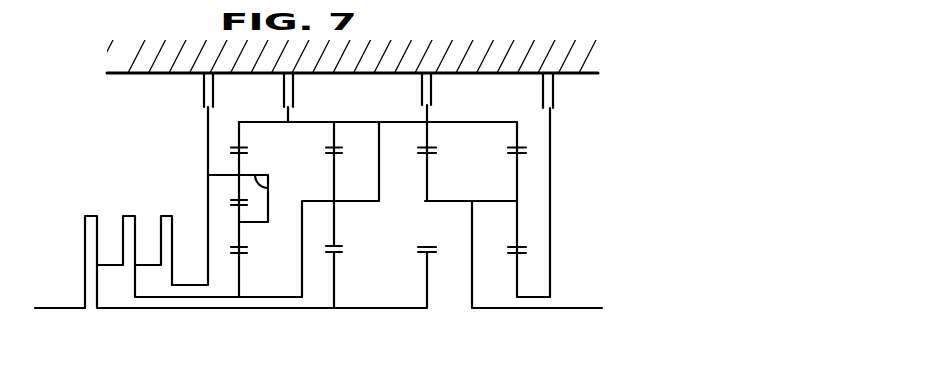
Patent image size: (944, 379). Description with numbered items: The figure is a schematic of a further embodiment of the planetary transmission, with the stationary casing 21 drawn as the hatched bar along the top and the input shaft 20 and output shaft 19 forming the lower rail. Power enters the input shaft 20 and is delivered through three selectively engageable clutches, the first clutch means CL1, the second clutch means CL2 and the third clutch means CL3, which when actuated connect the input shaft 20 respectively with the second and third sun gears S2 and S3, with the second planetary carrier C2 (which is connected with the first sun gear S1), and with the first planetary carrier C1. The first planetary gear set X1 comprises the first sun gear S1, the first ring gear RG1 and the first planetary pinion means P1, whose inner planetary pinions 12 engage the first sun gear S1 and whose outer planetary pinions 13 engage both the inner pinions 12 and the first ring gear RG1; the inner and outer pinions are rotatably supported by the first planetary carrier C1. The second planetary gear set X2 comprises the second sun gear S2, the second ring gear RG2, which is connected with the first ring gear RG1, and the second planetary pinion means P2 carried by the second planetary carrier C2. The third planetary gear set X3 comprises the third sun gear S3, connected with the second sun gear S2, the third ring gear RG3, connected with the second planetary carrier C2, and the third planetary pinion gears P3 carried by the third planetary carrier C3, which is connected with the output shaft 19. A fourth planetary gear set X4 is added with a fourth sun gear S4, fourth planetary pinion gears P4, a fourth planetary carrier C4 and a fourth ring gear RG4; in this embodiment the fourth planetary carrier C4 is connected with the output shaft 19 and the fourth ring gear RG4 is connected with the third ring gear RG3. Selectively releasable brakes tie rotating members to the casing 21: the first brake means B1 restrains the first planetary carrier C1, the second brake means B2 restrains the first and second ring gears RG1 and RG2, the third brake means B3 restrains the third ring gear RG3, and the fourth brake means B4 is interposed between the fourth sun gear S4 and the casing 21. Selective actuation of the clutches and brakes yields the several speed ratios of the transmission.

The casing 21 is at (125, 74).
The first brake means B1 is at (202, 97).
The second brake means B2 is at (285, 97).
The third brake means B3 is at (423, 98).
The fourth brake means B4 is at (557, 98).
The first ring gear RG1 is at (242, 136).
The second ring gear RG2 is at (335, 134).
The third ring gear RG3 is at (428, 136).
The fourth ring gear RG4 is at (518, 133).
The first clutch means CL1 is at (91, 216).
The second clutch means CL2 is at (129, 216).
The third clutch means CL3 is at (167, 216).
The outer planetary pinions 13 is at (239, 167).
The inner planetary pinions 12 is at (239, 208).
The first planetary carrier C1 is at (258, 220).
The second planetary carrier C2 is at (352, 201).
The third planetary carrier C3 is at (448, 199).
The fourth planetary carrier C4 is at (497, 199).
The first planetary pinion means P1 is at (230, 235).
The second planetary pinion means P2 is at (334, 222).
The third planetary pinion gears P3 is at (426, 183).
The fourth planetary pinion gears P4 is at (518, 185).
The first sun gear S1 is at (240, 288).
The second sun gear S2 is at (335, 290).
The third sun gear S3 is at (427, 296).
The fourth sun gear S4 is at (518, 278).
The first planetary gear set X1 is at (231, 273).
The second planetary gear set X2 is at (326, 274).
The third planetary gear set X3 is at (416, 270).
The fourth planetary gear set X4 is at (507, 272).
The input shaft 20 is at (61, 309).
The output shaft 19 is at (572, 310).